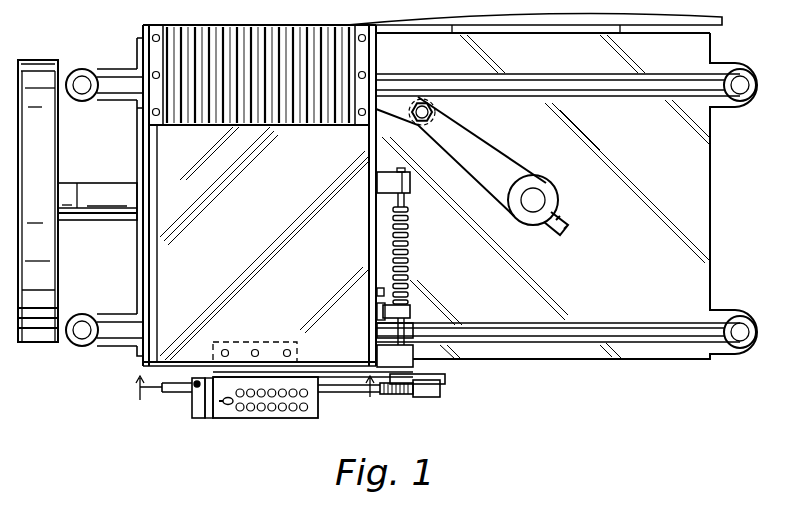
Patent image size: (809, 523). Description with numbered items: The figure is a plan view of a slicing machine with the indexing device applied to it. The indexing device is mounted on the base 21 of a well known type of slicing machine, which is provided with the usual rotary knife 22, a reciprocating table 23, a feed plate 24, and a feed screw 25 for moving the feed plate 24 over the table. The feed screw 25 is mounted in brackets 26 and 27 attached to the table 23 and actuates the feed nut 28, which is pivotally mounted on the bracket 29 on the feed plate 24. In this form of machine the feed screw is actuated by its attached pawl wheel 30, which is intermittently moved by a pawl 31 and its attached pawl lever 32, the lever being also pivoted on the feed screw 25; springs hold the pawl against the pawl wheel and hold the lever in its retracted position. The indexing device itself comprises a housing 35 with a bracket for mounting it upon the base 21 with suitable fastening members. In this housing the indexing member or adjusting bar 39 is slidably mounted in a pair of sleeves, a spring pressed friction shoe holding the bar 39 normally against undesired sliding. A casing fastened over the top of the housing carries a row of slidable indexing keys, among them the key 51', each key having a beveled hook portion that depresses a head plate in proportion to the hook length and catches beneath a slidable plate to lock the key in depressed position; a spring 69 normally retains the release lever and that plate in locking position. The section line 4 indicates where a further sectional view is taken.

The base 21 is at (525, 353).
The rotary knife 22 is at (724, 17).
The reciprocating table 23 is at (143, 357).
The feed plate 24 is at (155, 257).
The feed screw 25 is at (410, 265).
The bracket 26 is at (413, 350).
The bracket 27 is at (410, 182).
The feed nut 28 is at (414, 312).
The bracket 29 is at (377, 297).
The pawl wheel 30 is at (396, 406).
The pawl 31 is at (420, 398).
The pawl lever 32 is at (442, 378).
The housing 35 is at (200, 400).
The indexing member or adjusting bar 39 is at (347, 392).
The indexing key 51' is at (261, 412).
The spring 69 is at (228, 404).
The section line 4- 4 is at (251, 399).